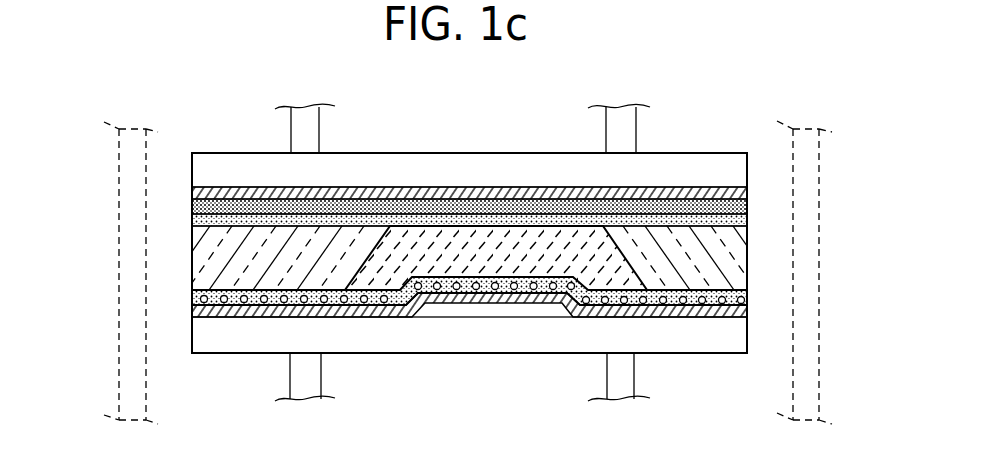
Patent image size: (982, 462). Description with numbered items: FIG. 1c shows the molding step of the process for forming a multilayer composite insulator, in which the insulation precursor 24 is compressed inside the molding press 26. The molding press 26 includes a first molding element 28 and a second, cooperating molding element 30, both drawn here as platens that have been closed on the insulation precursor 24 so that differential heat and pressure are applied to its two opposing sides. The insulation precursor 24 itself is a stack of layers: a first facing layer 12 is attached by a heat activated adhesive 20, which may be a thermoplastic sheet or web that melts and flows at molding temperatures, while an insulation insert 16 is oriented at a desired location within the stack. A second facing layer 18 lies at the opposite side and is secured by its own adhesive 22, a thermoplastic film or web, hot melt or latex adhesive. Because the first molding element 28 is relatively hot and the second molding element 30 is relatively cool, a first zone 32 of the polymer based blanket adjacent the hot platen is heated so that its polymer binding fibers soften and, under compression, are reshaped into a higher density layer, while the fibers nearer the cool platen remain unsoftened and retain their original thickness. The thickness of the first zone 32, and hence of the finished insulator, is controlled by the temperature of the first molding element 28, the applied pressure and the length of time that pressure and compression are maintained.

The first facing layer 12 is at (692, 310).
The insulation insert 16 is at (485, 245).
The second facing layer 18 is at (748, 193).
The heat activated adhesive 20 is at (744, 281).
The adhesive 22 is at (748, 209).
The insulation precursor 24 is at (166, 249).
The molding press 26 is at (692, 100).
The first molding element 28 is at (403, 167).
The second molding element 30 is at (435, 335).
The first zone 32 is at (748, 222).